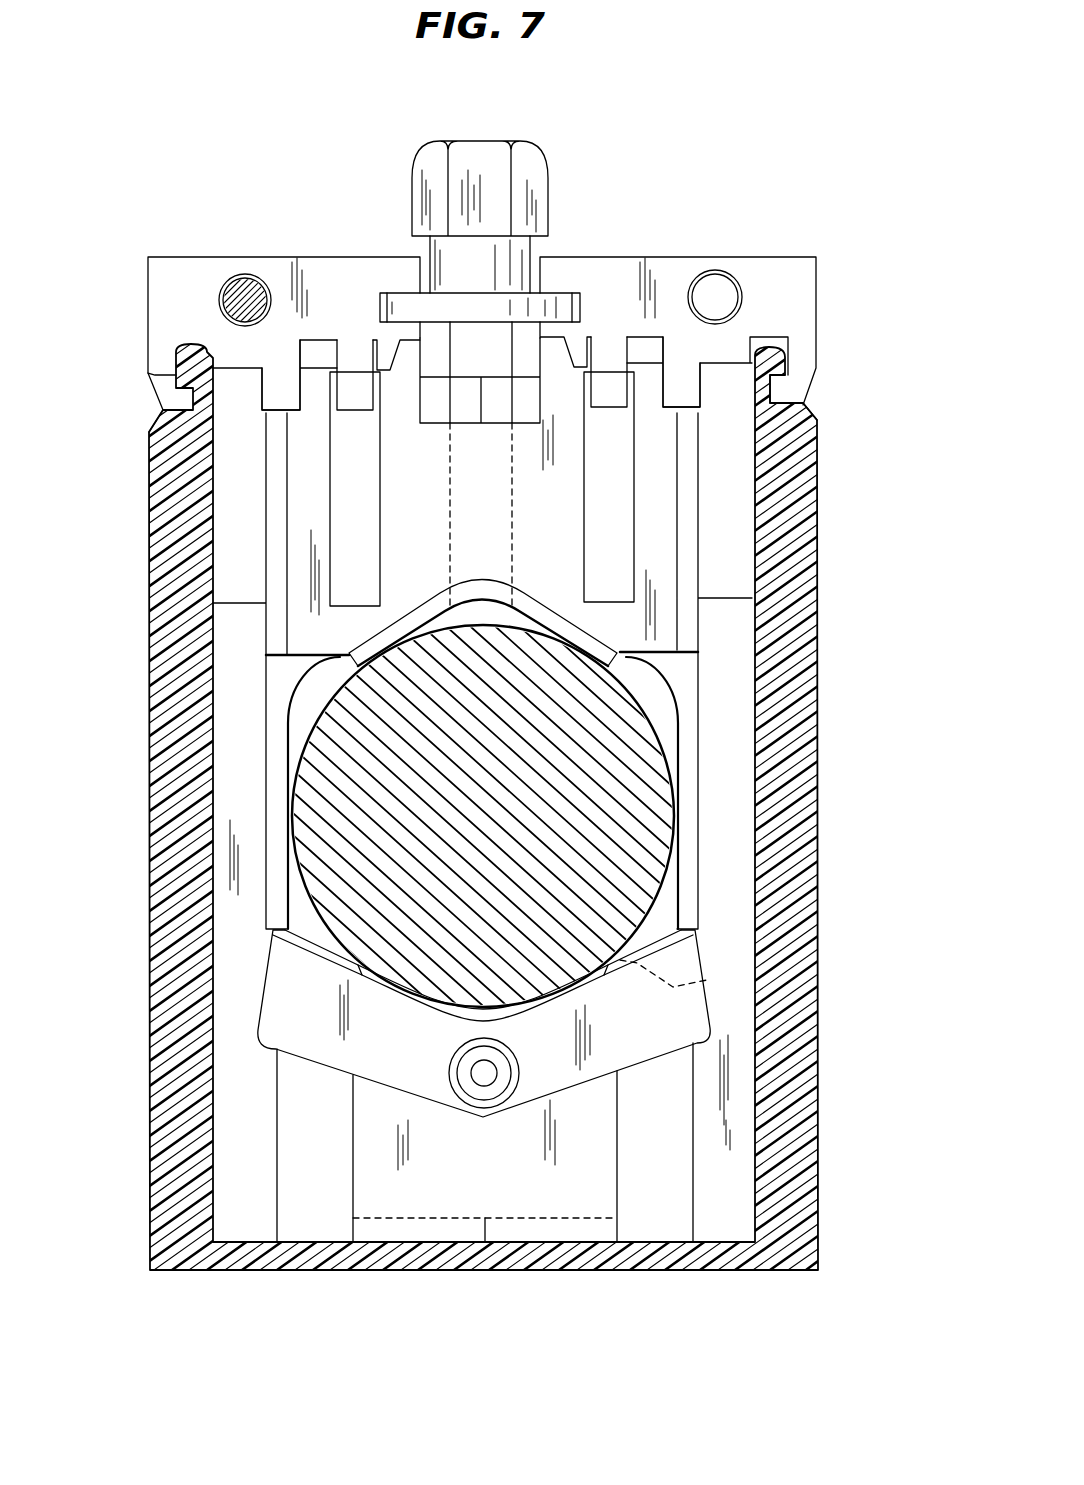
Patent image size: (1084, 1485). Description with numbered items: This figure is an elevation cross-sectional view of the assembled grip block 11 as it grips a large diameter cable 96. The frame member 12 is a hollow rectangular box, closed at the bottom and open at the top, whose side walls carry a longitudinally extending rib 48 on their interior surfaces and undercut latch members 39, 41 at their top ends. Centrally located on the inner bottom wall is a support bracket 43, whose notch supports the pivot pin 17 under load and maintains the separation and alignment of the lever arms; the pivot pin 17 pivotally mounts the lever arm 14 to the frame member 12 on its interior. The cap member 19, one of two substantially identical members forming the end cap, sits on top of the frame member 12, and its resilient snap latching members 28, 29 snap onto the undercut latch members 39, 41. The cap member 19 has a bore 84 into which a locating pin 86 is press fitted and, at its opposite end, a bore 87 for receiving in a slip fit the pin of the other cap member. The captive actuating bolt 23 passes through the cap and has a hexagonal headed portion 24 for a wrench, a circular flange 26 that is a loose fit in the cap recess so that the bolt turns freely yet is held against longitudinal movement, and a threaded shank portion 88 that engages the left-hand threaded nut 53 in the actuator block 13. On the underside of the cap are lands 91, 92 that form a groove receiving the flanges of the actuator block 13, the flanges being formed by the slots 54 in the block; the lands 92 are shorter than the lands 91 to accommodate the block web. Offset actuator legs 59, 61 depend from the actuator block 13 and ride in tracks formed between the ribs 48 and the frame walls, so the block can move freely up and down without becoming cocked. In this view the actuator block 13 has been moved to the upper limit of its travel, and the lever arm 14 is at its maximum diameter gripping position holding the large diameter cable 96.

The grip block 11 is at (181, 226).
The frame member 12 is at (813, 968).
The actuator block 13 is at (302, 636).
The lever arm 14 is at (295, 1043).
The pivot pin 17 is at (470, 1073).
The cap member 19 is at (752, 263).
The actuating bolt 23 is at (468, 525).
The headed portion 24 is at (548, 180).
The circular flange 26 is at (570, 297).
The resilient snap latching member 28 is at (163, 410).
The resilient snap latching member 29 is at (798, 405).
The undercut latch member 39 is at (790, 372).
The undercut latch member 41 is at (156, 373).
The support bracket 43 is at (502, 1176).
The rib 48 is at (720, 1227).
The nut 53 is at (435, 410).
The slot 54 is at (622, 508).
The actuator leg 59 is at (681, 688).
The actuator leg 61 is at (285, 680).
The bore 84 is at (232, 301).
The locating pin 86 is at (255, 275).
The bore 87 is at (732, 298).
The threaded shank portion 88 is at (515, 525).
The land 91 is at (683, 380).
The land 92 is at (607, 363).
The large diameter cable 96 is at (656, 823).